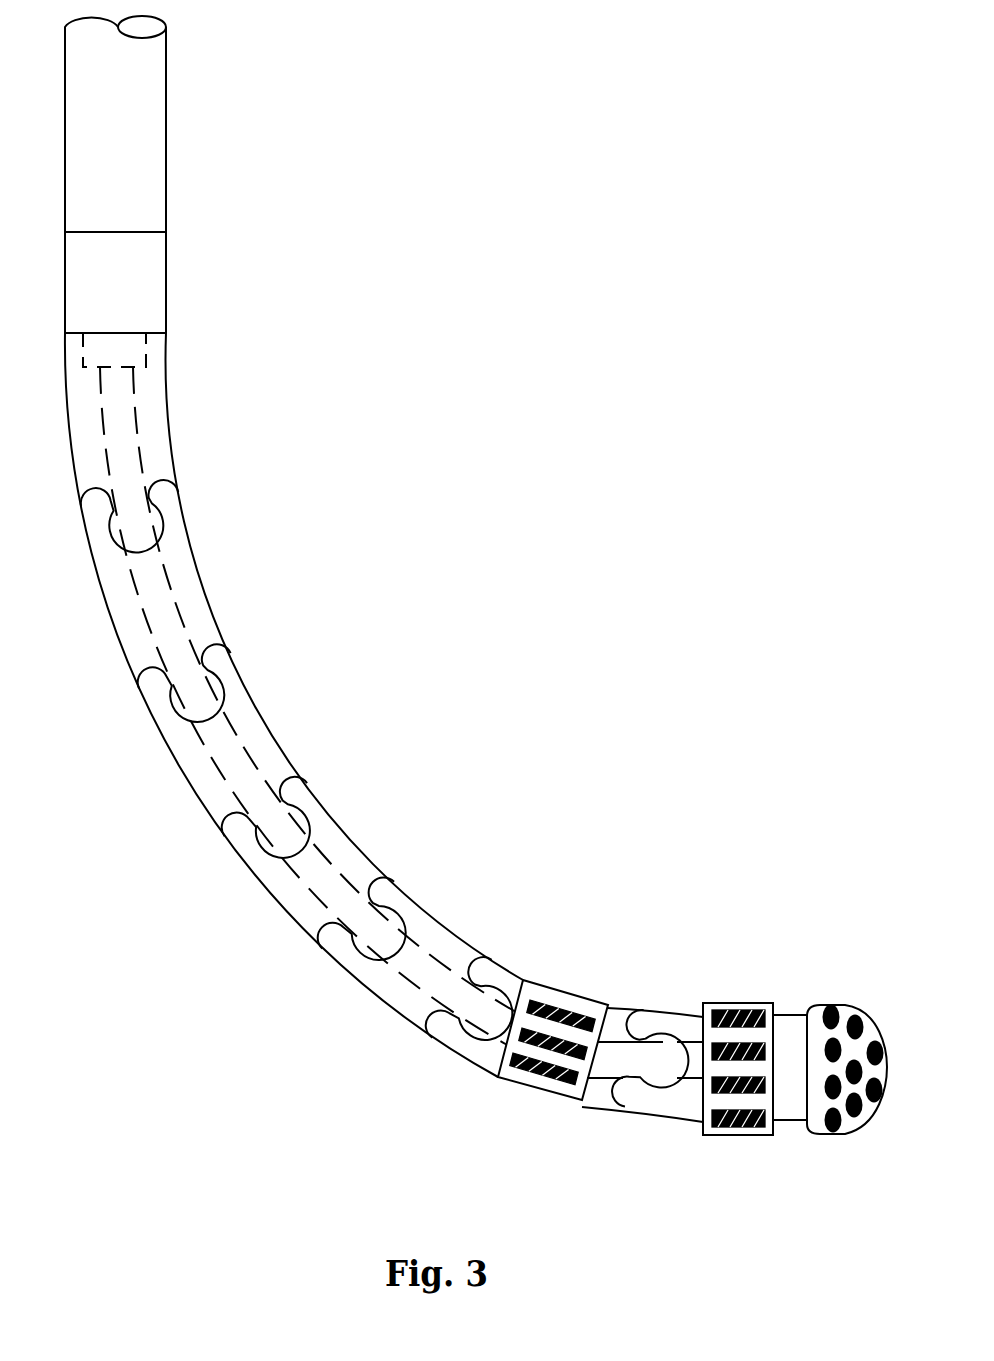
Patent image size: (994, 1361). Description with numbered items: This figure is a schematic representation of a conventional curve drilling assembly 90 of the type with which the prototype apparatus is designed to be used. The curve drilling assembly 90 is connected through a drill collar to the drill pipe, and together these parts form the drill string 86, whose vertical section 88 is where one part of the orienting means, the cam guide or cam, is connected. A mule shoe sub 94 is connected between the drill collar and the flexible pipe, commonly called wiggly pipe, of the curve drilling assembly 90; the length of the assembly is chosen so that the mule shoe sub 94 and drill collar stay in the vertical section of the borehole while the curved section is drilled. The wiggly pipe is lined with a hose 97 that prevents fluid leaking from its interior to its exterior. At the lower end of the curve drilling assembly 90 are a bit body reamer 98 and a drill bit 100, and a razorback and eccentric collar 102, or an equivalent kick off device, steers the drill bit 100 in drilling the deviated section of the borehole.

The drill string 86 is at (209, 593).
The vertical section 88 is at (132, 150).
The curve drilling assembly 90 is at (412, 744).
The mule shoe sub 94 is at (152, 293).
The hose 97 is at (343, 877).
The bit body reamer 98 is at (723, 1023).
The drill bit 100 is at (818, 1015).
The razorback and eccentric collar 102 is at (552, 1007).